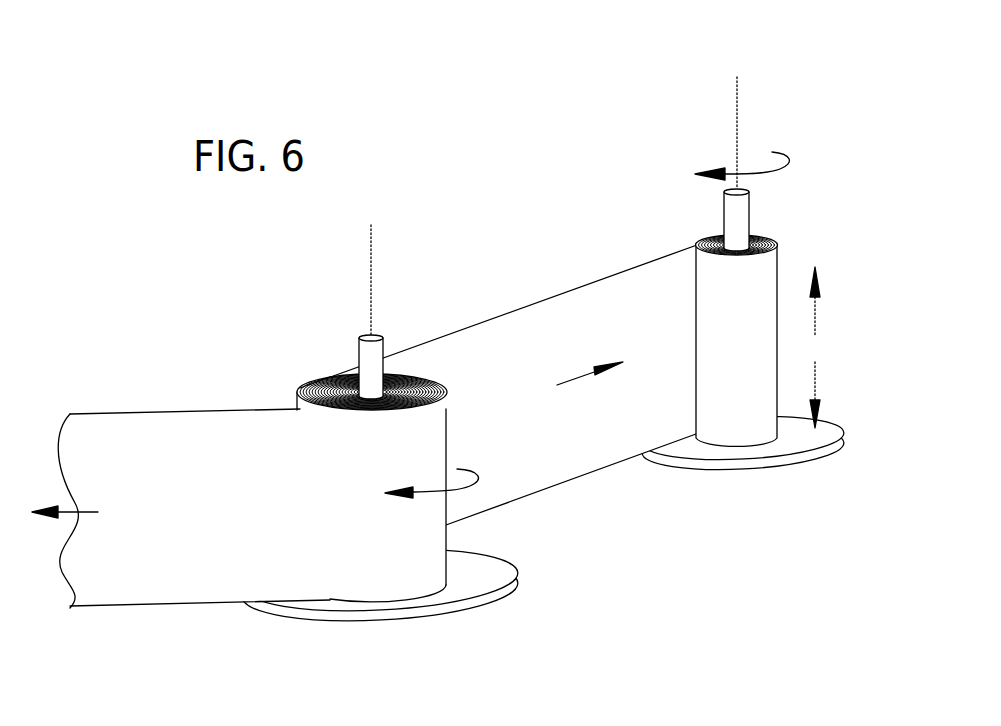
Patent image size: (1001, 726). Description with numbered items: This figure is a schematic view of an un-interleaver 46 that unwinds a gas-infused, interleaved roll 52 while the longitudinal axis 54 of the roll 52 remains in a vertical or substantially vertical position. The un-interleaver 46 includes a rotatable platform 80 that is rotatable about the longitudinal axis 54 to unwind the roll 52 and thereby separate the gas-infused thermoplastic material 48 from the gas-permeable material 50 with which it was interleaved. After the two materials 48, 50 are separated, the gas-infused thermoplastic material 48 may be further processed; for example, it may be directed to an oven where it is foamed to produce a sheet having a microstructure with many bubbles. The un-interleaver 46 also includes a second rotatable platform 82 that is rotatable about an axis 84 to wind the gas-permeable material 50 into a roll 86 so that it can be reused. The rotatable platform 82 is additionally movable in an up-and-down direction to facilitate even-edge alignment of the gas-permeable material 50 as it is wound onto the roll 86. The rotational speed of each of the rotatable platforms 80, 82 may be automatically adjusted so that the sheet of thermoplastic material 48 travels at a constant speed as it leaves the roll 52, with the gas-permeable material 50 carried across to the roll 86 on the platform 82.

The un-interleaver 46 is at (490, 120).
The gas-infused thermoplastic material 48 is at (187, 604).
The gas-permeable material 50 is at (600, 278).
The gas-infused, interleaved roll 52 is at (300, 391).
The longitudinal axis 54 is at (371, 262).
The rotatable platform 80 is at (432, 600).
The rotatable platform 82 is at (833, 433).
The axis 84 is at (737, 120).
The roll 86 is at (780, 258).